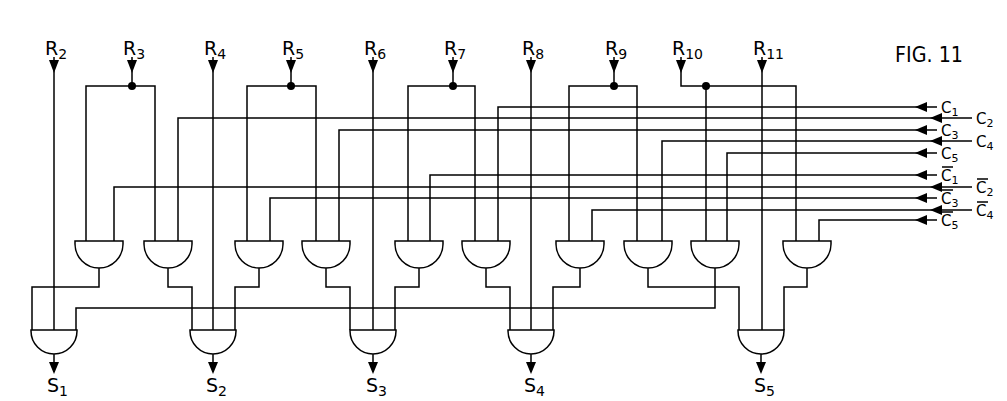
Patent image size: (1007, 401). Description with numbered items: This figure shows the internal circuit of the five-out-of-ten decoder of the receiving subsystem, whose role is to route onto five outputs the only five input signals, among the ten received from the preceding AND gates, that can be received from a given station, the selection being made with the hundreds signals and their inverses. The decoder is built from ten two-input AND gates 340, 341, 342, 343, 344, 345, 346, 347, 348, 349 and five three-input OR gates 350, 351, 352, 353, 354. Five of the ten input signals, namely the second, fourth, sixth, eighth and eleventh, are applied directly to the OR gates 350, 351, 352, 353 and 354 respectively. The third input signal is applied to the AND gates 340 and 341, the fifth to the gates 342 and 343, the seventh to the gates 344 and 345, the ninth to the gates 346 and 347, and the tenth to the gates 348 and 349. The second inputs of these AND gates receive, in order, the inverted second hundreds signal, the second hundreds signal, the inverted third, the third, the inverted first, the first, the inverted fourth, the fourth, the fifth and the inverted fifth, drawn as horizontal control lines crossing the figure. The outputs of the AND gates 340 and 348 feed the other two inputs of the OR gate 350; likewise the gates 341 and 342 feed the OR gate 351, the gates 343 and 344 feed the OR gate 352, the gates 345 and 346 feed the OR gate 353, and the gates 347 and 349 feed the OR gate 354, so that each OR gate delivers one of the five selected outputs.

The two-input AND gate 340 is at (120, 255).
The two-input AND gate 341 is at (189, 255).
The two-input AND gate 342 is at (293, 266).
The two-input AND gate 343 is at (360, 266).
The two-input AND gate 344 is at (398, 255).
The two-input AND gate 345 is at (465, 255).
The two-input AND gate 346 is at (559, 255).
The two-input AND gate 347 is at (627, 255).
The two-input AND gate 348 is at (694, 255).
The two-input AND gate 349 is at (828, 255).
The three-input OR gate 350 is at (73, 342).
The three-input OR gate 351 is at (232, 342).
The three-input OR gate 352 is at (392, 342).
The three-input OR gate 353 is at (550, 342).
The three-input OR gate 354 is at (780, 342).